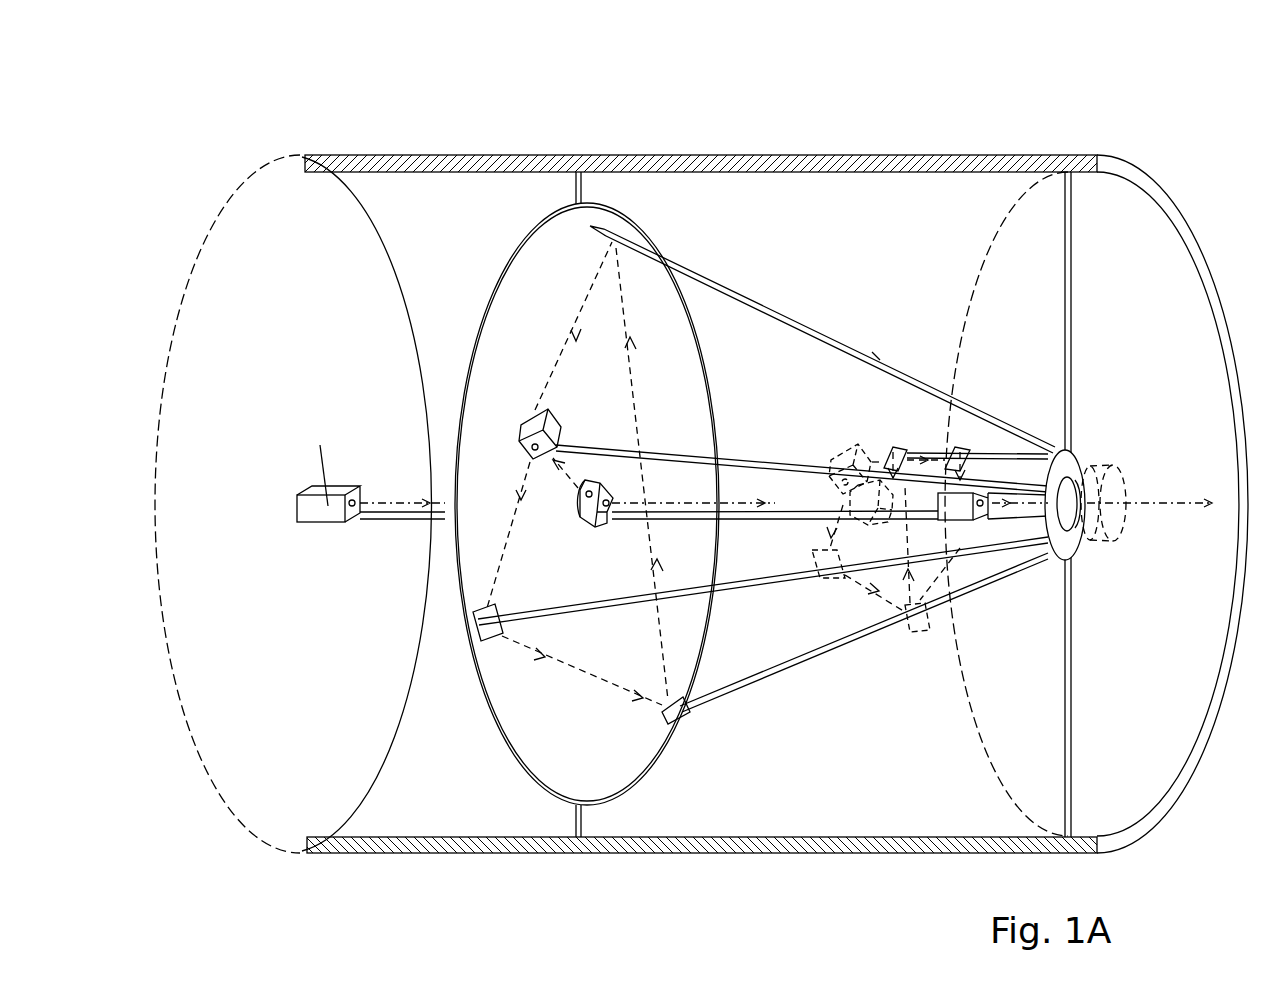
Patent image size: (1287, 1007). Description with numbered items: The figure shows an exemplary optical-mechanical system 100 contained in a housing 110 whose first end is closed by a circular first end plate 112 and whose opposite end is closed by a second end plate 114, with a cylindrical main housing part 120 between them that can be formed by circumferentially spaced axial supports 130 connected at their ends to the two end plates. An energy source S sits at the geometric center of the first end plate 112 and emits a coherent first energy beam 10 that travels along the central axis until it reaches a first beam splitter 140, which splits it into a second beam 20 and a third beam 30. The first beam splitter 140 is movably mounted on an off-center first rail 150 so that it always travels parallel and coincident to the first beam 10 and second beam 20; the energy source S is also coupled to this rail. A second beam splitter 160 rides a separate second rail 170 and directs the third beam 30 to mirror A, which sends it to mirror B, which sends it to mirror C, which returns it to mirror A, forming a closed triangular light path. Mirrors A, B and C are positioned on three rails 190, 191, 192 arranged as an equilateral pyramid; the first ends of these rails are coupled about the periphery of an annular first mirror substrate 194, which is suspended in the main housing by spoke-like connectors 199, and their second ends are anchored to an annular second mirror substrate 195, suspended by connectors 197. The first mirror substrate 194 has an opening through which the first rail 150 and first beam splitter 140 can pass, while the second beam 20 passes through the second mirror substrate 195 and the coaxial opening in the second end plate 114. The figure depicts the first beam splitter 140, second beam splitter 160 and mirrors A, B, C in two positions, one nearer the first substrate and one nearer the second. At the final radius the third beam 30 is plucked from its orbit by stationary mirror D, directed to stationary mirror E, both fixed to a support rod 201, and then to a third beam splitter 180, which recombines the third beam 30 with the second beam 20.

The optical-mechanical system 100 is at (699, 108).
The housing 110 is at (517, 860).
The first end plate 112 is at (250, 180).
The second end plate 114 is at (1118, 166).
The main housing part 120 is at (905, 146).
The axial supports 130 is at (443, 154).
The first beam splitter 140 is at (594, 523).
The first rail 150 is at (407, 522).
The second beam splitter 160 is at (535, 430).
The second rail 170 is at (681, 459).
The third beam splitter 180 is at (958, 512).
The rail for mirror A 190 is at (604, 603).
The rail for mirror B 191 is at (822, 660).
The rail for mirror C 192 is at (748, 297).
The first mirror substrate 194 is at (527, 232).
The second mirror substrate 195 is at (1082, 466).
The connector 197 is at (1073, 301).
The connector 199 is at (583, 188).
The support rod 201 is at (1010, 450).
The first energy beam 10 is at (395, 500).
The second beam 20 is at (783, 493).
The third beam 30 is at (622, 321).